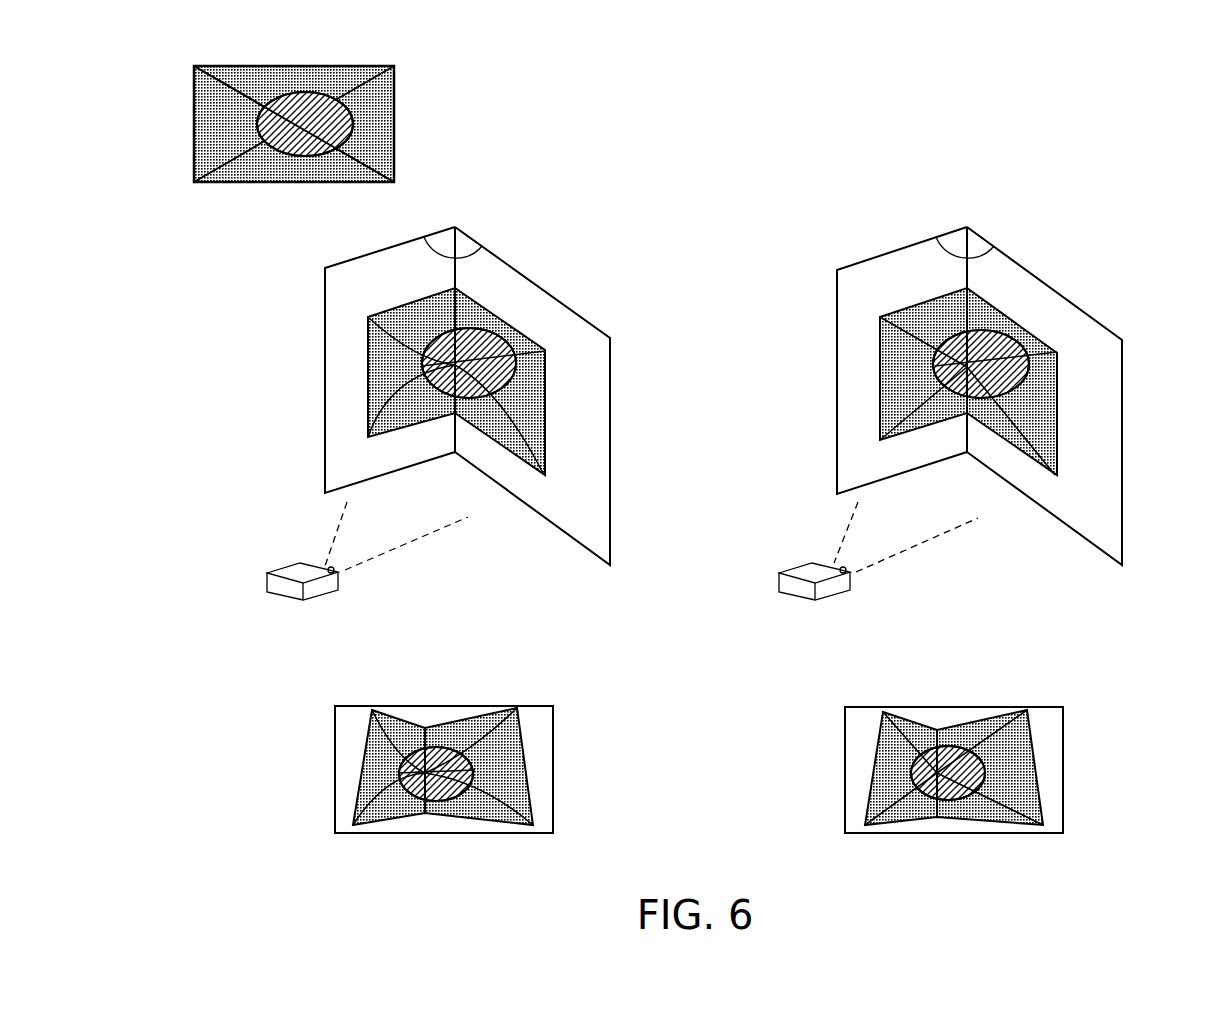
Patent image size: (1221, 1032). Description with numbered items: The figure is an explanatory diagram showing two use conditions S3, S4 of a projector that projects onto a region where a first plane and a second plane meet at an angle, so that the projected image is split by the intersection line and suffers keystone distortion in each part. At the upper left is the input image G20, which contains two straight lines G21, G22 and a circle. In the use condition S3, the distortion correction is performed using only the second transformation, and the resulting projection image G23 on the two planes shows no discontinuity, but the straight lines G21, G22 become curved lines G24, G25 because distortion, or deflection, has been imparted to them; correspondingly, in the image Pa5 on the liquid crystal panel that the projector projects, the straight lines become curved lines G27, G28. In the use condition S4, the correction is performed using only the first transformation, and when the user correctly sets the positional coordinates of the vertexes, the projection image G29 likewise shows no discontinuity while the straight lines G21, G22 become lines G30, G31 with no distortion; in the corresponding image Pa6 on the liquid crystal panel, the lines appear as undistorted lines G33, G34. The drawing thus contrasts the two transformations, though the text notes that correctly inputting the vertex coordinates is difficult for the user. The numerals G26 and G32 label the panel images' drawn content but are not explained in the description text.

The input image G20 is at (339, 150).
The straight line G21 is at (237, 175).
The straight line G22 is at (347, 160).
The projection image G23 is at (527, 419).
The curved line G24 is at (397, 427).
The curved line G25 is at (515, 462).
The captured image of projection (Pa5) G26 is at (444, 766).
The curved line G27 is at (383, 803).
The curved line G28 is at (493, 807).
The projection image G29 is at (1037, 420).
The line G30 is at (917, 425).
The line G31 is at (1018, 443).
The captured image of corrected projection (Pa6) G32 is at (955, 773).
The line G33 is at (900, 820).
The line G34 is at (1000, 820).
The use condition S3 is at (474, 408).
The use condition S4 is at (987, 408).
The image on the liquid crystal panel Pa5 is at (487, 766).
The image on the liquid crystal panel Pa6 is at (997, 773).